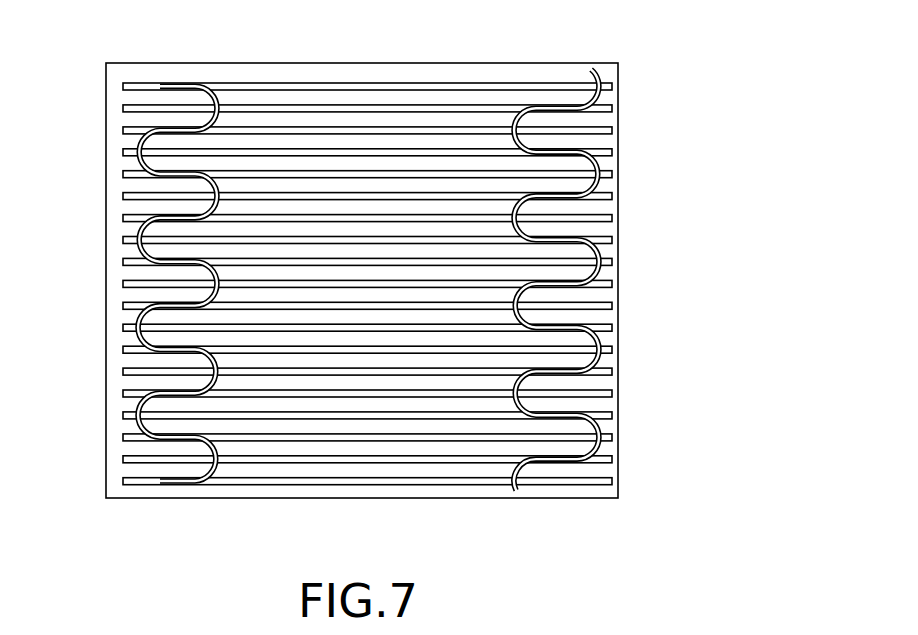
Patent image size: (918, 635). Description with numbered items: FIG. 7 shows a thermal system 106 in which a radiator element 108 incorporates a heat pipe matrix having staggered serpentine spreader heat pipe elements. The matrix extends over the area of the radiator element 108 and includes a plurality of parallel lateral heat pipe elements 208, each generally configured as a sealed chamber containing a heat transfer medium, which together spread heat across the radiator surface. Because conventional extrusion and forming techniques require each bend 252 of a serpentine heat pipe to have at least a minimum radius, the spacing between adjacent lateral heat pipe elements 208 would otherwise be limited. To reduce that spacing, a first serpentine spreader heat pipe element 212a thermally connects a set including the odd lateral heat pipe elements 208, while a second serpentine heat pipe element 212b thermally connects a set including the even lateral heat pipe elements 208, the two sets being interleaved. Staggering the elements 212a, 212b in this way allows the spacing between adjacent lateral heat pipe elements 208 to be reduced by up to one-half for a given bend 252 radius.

The thermal system 106 is at (373, 281).
The radiator element 108 is at (107, 222).
The lateral heat pipe element 208 is at (320, 455).
The first serpentine spreader heat pipe element 212a is at (124, 421).
The second serpentine heat pipe element 212b is at (615, 279).
The bend 252 is at (595, 340).